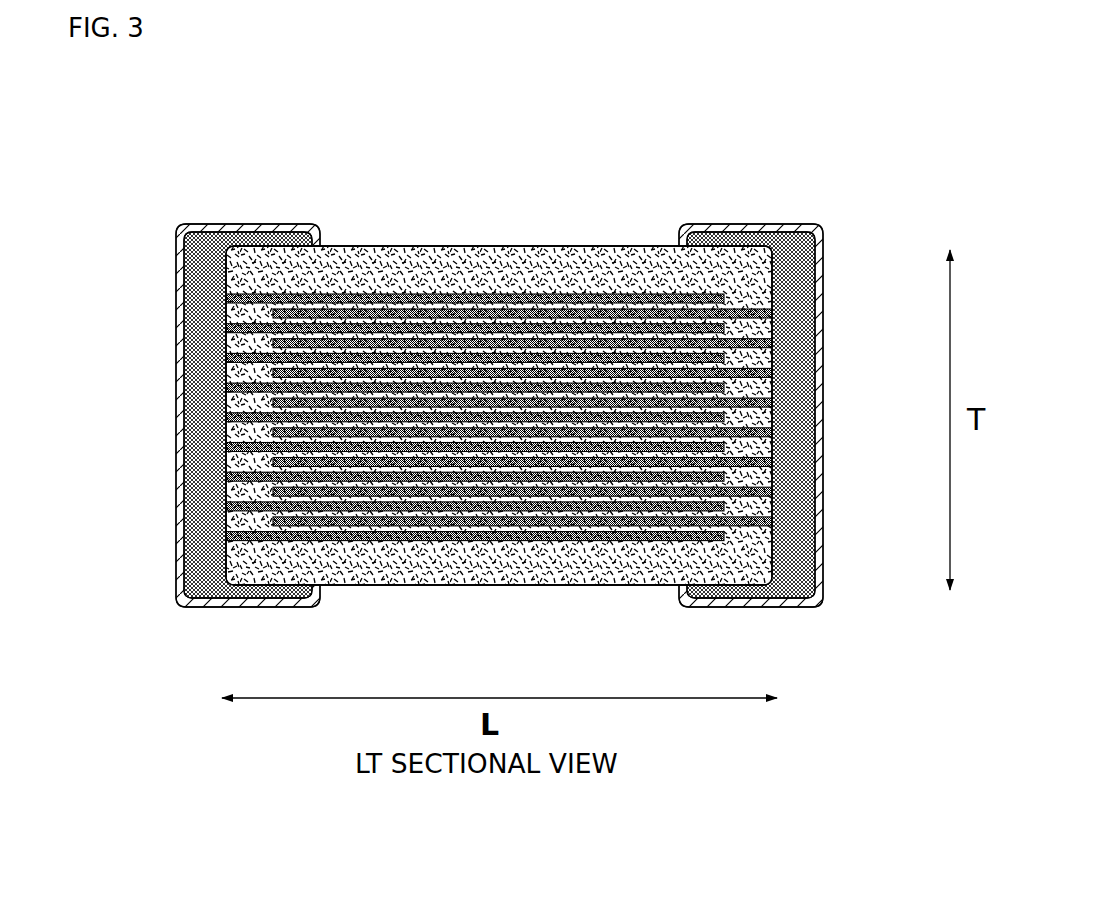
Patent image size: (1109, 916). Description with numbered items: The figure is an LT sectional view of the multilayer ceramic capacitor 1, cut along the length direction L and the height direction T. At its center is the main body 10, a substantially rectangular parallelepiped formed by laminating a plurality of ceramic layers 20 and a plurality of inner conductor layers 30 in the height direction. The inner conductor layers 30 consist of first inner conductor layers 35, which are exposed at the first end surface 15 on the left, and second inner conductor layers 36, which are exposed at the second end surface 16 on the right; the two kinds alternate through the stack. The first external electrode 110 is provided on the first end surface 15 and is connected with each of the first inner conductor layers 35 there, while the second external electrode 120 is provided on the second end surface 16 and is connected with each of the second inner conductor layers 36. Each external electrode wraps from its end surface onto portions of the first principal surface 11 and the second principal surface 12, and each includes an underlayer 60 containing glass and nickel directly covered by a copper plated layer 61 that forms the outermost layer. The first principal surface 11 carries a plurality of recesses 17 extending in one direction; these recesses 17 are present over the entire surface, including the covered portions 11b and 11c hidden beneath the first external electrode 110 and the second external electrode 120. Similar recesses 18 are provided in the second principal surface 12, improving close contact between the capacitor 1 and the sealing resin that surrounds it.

The multilayer ceramic capacitor 1 is at (783, 191).
The main body 10 is at (586, 222).
The first principal surface 11 is at (395, 246).
The covered portion 11b is at (272, 246).
The covered portion 11c is at (720, 246).
The second principal surface 12 is at (505, 586).
The first end surface 15 is at (225, 370).
The second end surface 16 is at (772, 385).
The recesses 17 is at (487, 246).
The recesses 18 is at (432, 586).
The ceramic layers 20 is at (313, 527).
The inner conductor layers 30 is at (496, 461).
The first inner conductor layers 35 is at (243, 528).
The second inner conductor layers 36 is at (752, 520).
The underlayer 60 is at (200, 443).
The Cu plated layer 61 is at (180, 418).
The first external electrode 110 is at (168, 284).
The second external electrode 120 is at (833, 283).